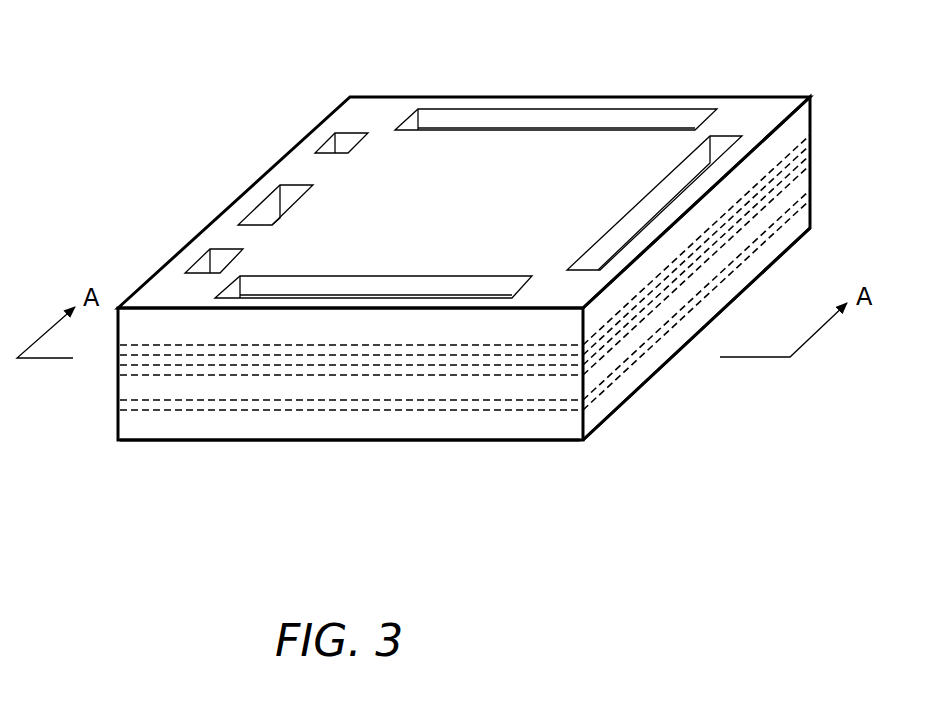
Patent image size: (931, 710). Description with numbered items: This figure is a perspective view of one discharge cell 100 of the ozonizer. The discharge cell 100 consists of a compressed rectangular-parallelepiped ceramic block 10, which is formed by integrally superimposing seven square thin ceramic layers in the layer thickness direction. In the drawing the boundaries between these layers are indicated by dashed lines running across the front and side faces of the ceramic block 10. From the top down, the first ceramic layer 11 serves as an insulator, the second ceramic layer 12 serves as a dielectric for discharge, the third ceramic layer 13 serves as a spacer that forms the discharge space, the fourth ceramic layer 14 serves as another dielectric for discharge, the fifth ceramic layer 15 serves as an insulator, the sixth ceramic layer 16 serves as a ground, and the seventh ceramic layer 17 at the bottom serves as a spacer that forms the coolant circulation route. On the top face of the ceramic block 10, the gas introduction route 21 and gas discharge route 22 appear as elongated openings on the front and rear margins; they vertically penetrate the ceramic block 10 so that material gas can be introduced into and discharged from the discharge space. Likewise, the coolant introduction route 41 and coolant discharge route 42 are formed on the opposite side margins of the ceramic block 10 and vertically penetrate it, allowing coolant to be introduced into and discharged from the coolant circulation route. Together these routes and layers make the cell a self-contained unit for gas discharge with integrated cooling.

The ceramic block 10 is at (167, 447).
The discharge cell 100 is at (327, 479).
The first ceramic layer 11 is at (813, 115).
The second ceramic layer 12 is at (813, 142).
The third ceramic layer 13 is at (813, 167).
The fourth ceramic layer 14 is at (493, 365).
The fifth ceramic layer 15 is at (440, 383).
The sixth ceramic layer 16 is at (658, 342).
The seventh ceramic layer 17 is at (620, 392).
The gas introduction route 21 is at (367, 290).
The gas discharge route 22 is at (535, 120).
The coolant introduction route 41 is at (330, 145).
The coolant discharge route 42 is at (723, 143).